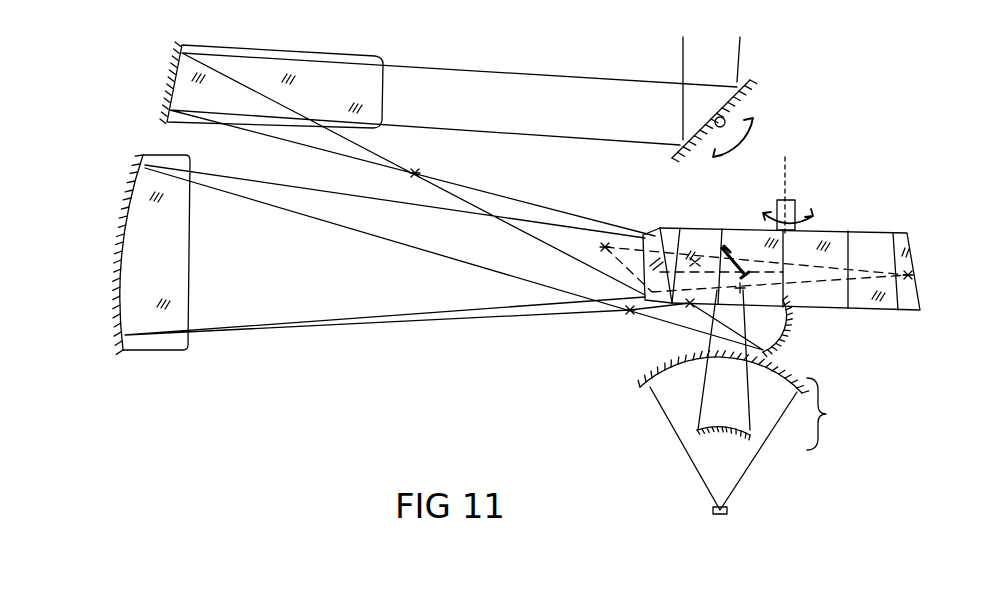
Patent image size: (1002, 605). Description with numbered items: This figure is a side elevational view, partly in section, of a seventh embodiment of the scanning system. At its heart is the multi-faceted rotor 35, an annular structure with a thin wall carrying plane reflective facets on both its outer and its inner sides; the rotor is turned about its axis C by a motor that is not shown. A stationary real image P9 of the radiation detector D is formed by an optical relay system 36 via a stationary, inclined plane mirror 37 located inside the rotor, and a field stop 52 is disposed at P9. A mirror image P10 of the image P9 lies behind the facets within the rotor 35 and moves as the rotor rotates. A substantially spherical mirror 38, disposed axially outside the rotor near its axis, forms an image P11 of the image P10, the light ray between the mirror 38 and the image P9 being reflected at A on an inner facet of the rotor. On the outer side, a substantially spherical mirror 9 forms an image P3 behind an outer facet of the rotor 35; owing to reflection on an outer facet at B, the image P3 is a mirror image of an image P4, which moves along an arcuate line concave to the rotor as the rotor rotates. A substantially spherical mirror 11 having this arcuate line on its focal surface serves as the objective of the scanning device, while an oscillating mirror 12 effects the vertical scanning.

The substantially spherical mirror 9 is at (222, 387).
The substantially spherical mirror 11 is at (160, 83).
The oscillating mirror 12 is at (750, 90).
The multi-faceted rotor 35 is at (896, 310).
The optical relay system 36 is at (827, 414).
The inclined plane mirror 37 is at (742, 260).
The substantially spherical mirror 38 is at (786, 337).
The field stop 52 is at (695, 262).
The reflection point on inner facet A is at (655, 263).
The reflection point on outer facet B is at (646, 240).
The rotor axis C is at (797, 203).
The radiation detector D is at (727, 515).
The image P3 is at (912, 275).
The image P4 is at (418, 174).
The stationary real image of the detector P9 is at (690, 305).
The mirror image of P9 P10 is at (600, 250).
The image P11 is at (630, 313).